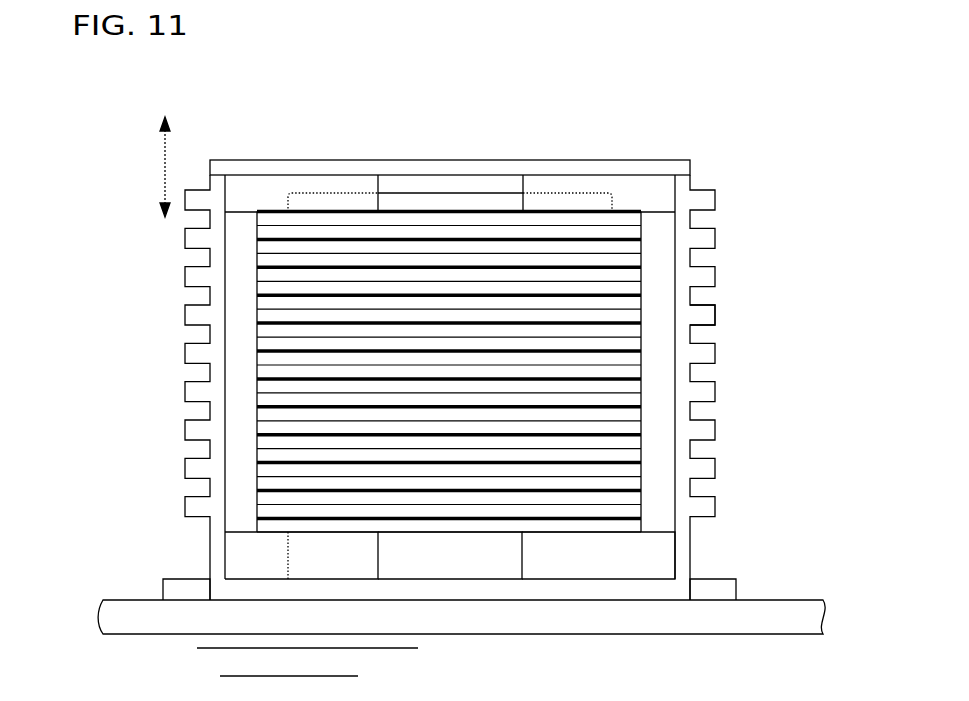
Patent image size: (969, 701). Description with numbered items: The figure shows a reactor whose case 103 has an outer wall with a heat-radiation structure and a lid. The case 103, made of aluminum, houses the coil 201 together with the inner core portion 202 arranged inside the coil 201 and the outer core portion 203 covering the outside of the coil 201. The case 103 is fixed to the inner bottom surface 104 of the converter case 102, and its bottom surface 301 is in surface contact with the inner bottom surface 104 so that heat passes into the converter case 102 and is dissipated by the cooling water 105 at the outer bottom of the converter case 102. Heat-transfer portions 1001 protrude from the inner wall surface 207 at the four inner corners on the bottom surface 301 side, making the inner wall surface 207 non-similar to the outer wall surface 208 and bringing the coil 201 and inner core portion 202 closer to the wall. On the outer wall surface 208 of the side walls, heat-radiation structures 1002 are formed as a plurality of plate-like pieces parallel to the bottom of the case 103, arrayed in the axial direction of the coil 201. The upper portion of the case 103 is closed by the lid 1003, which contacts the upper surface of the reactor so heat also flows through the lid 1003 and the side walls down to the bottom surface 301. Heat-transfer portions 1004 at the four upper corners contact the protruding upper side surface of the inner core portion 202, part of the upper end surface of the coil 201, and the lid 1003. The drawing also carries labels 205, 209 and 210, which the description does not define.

The converter case 102 is at (124, 604).
The case 103 is at (720, 235).
The inner bottom surface 104 is at (773, 600).
The cooling water 105 is at (577, 693).
The coil 201 is at (578, 218).
The inner core portion 202 is at (442, 207).
The outer core portion 203 is at (238, 375).
The vertical direction 205 is at (162, 166).
The inner wall surface 207 is at (225, 190).
The outer wall surface 208 is at (207, 263).
The inner wall 209 is at (213, 421).
The right inner wall 210 is at (715, 428).
The bottom surface 301 is at (634, 588).
The heat-transfer portions 1001 is at (247, 560).
The heat-radiation structures 1002 is at (707, 317).
The lid 1003 is at (403, 167).
The heat-transfer portions 1004 is at (570, 183).